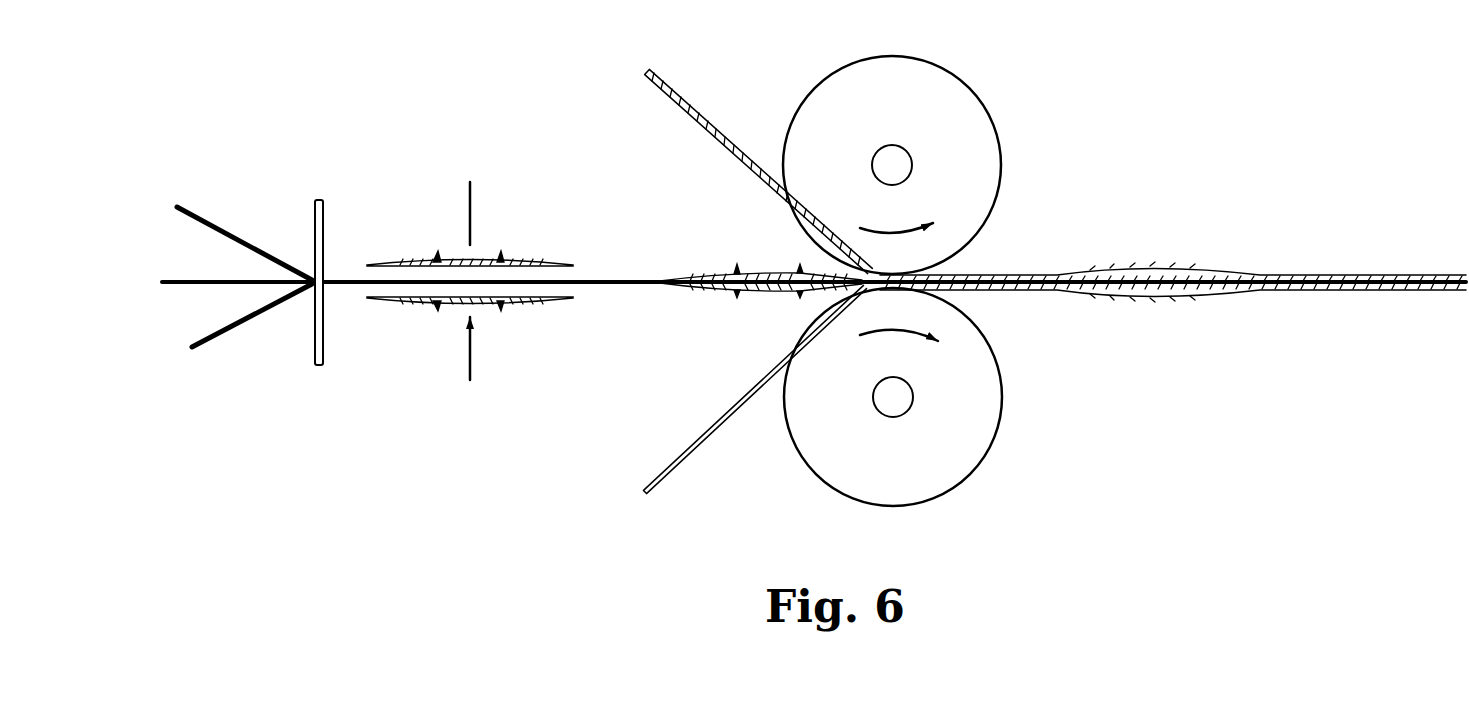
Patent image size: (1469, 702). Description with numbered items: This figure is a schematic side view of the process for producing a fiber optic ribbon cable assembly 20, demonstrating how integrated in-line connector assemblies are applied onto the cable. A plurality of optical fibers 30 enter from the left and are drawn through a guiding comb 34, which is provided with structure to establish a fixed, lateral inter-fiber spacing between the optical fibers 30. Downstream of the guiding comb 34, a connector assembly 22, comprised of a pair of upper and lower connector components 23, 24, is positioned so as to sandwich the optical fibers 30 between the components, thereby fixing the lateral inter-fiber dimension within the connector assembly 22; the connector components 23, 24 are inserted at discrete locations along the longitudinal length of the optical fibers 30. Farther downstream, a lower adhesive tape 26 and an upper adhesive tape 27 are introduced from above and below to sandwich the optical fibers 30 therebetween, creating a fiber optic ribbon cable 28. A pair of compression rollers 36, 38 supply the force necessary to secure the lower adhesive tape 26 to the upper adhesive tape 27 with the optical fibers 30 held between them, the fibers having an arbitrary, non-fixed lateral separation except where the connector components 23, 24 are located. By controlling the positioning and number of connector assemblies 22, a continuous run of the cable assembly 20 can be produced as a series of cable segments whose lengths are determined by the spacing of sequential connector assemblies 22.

The fiber optic ribbon cable assembly 20 is at (1077, 58).
The connector assembly 22 is at (401, 307).
The lower connector component 23 is at (512, 303).
The upper connector component 24 is at (430, 263).
The lower adhesive tape 26 is at (672, 82).
The upper adhesive tape 27 is at (672, 455).
The fiber optic ribbon cable 28 is at (1403, 298).
The optical fibers 30 is at (193, 277).
The guiding comb 34 is at (324, 212).
The compression roller 36 is at (972, 453).
The compression roller 38 is at (963, 97).